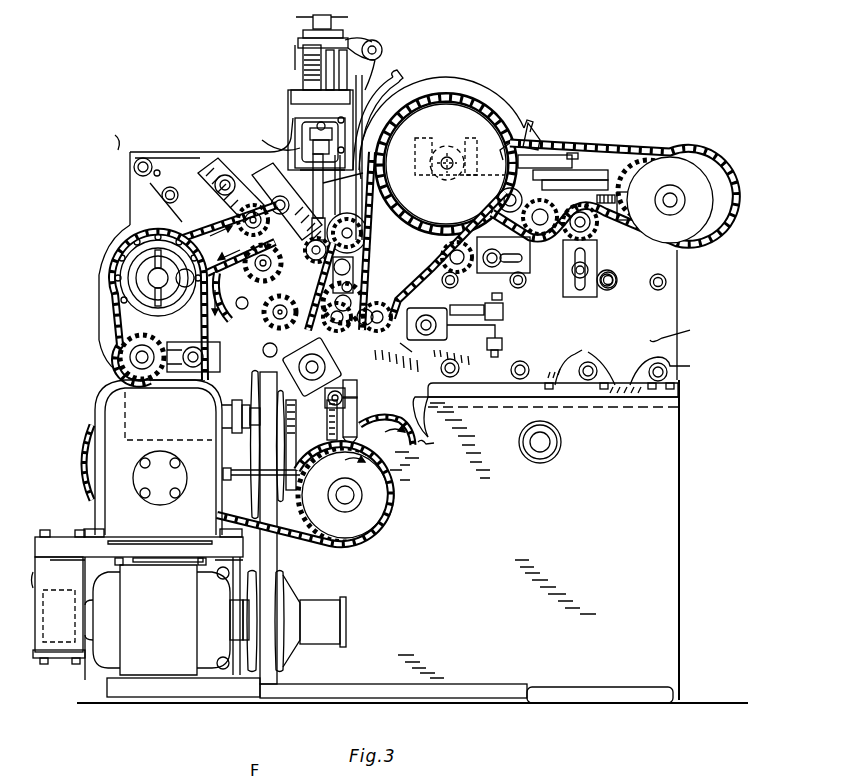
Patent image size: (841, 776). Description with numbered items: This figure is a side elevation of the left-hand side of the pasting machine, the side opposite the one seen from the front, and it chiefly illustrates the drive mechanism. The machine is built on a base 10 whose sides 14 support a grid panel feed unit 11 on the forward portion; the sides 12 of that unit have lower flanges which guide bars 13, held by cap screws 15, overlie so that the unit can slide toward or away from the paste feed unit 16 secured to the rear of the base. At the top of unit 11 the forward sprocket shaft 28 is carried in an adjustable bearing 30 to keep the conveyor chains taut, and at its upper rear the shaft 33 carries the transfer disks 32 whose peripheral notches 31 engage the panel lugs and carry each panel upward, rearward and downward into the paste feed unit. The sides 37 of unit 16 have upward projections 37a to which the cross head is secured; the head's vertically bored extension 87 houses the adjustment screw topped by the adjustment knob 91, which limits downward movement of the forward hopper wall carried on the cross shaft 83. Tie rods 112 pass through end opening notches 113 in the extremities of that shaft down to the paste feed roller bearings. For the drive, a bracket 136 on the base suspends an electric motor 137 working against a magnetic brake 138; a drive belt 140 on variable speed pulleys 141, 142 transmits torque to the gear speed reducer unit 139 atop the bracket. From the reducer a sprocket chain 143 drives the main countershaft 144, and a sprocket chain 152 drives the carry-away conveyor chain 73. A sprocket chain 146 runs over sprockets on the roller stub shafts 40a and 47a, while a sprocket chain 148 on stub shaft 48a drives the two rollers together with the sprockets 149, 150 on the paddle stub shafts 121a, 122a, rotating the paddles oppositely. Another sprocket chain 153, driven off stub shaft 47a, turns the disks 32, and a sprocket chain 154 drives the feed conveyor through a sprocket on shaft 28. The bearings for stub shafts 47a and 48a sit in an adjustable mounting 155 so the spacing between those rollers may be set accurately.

The base 10 is at (682, 554).
The grid panel feed unit 11 is at (670, 314).
The sides of the grid panel feed unit 12 is at (683, 332).
The guide bars 13 is at (670, 369).
The sides of the base 14 is at (590, 531).
The cap screws 15 is at (580, 365).
The paste feed unit 16 is at (118, 150).
The front sprocket carrying shaft 28 is at (674, 200).
The adjustable bearing 30 is at (632, 175).
The notches 31 is at (467, 80).
The transfer disks 32 is at (496, 100).
The shaft 33 is at (450, 142).
The sides of the paste feed unit 37 is at (170, 152).
The upward projections 37a is at (284, 138).
The stub shaft 40a is at (352, 240).
The stub shaft 47a is at (390, 345).
The stub shaft 48a is at (296, 355).
The carry-away conveyor chain 73 is at (407, 448).
The cross shaft 83 is at (290, 118).
The vertically bored extension 87 is at (355, 45).
The adjustment knob 91 is at (300, 38).
The tie rods 112 is at (353, 176).
The end opening notches 113 is at (376, 85).
The stub shaft 121a is at (330, 275).
The stub shaft 122a is at (283, 207).
The bracket 136 is at (58, 545).
The electric motor 137 is at (122, 655).
The magnetic brake 138 is at (53, 660).
The gear speed reducer unit 139 is at (130, 412).
The drive belt 140 is at (268, 557).
The variable speed pulley 141 is at (285, 600).
The variable speed pulley 142 is at (252, 383).
The sprocket chain 143 is at (120, 310).
The main countershaft 144 is at (158, 278).
The sprocket chain 146 is at (353, 297).
The sprocket chain 148 is at (246, 282).
The sprocket 149 is at (272, 315).
The sprocket 150 is at (262, 262).
The sprocket chain 152 is at (372, 538).
The sprocket chain 153 is at (440, 90).
The sprocket chain 154 is at (648, 150).
The adjustable mounting 155 is at (497, 330).